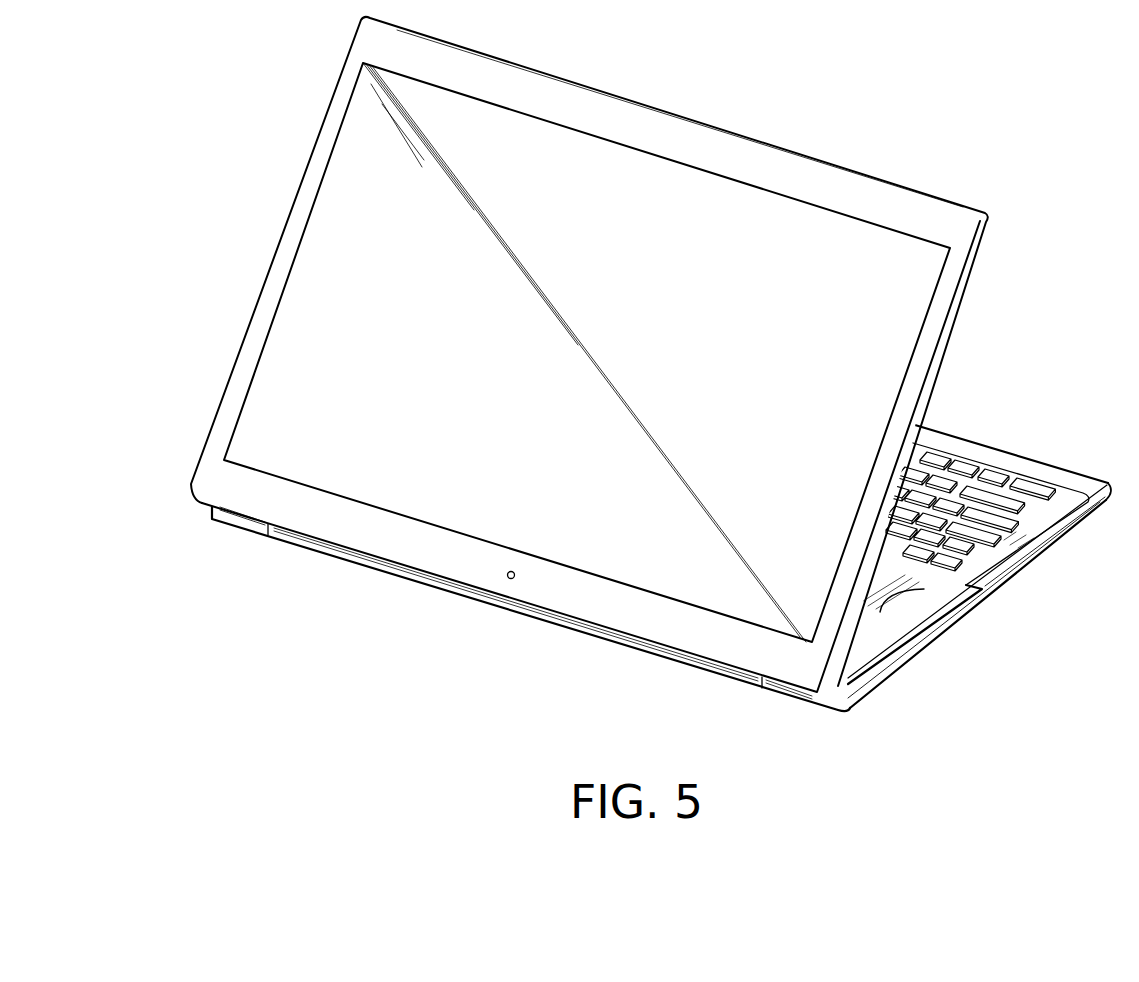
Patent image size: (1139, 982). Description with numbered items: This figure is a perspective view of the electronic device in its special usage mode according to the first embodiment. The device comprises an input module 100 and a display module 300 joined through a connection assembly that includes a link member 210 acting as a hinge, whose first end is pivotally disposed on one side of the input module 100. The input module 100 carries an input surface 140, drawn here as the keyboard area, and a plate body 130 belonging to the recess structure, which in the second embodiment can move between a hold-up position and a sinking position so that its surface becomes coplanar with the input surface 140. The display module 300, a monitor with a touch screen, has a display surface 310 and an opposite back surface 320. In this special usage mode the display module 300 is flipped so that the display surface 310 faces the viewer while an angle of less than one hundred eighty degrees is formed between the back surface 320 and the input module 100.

The input module 100 is at (903, 657).
The plate body 130 is at (950, 596).
The input surface 140 is at (990, 497).
The link member 210 is at (513, 605).
The display module 300 is at (629, 354).
The display surface 310 is at (383, 255).
The back surface 320 is at (953, 328).